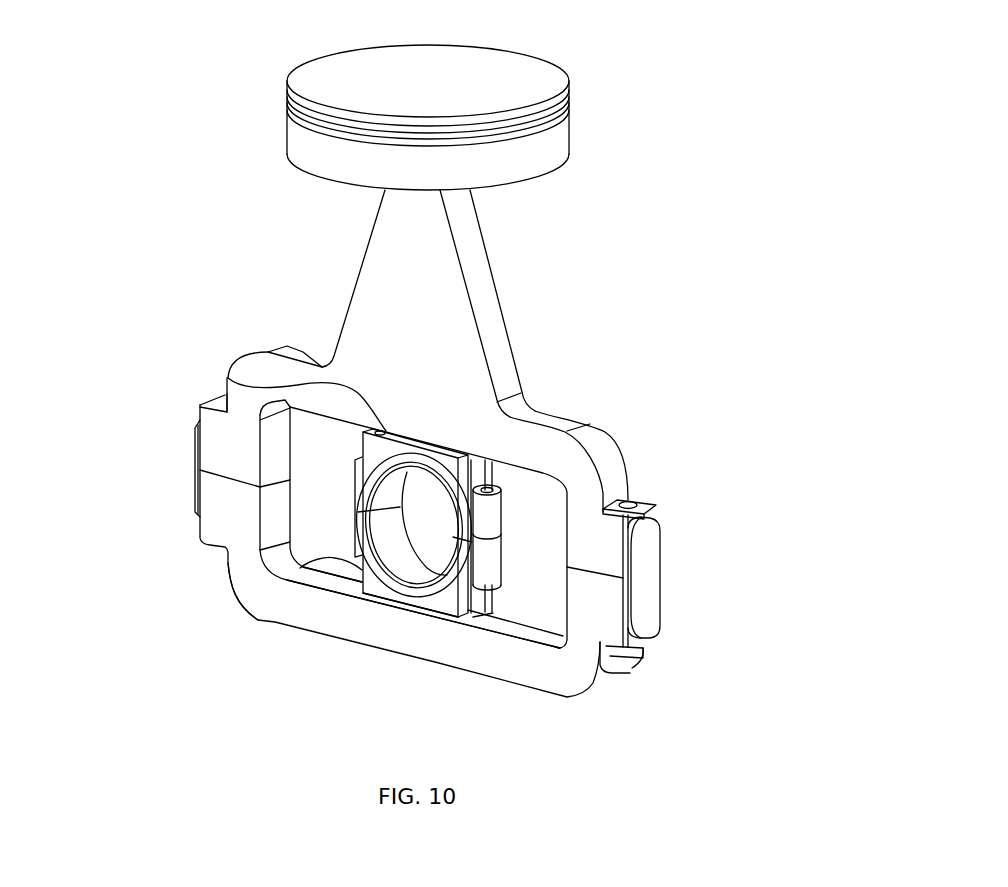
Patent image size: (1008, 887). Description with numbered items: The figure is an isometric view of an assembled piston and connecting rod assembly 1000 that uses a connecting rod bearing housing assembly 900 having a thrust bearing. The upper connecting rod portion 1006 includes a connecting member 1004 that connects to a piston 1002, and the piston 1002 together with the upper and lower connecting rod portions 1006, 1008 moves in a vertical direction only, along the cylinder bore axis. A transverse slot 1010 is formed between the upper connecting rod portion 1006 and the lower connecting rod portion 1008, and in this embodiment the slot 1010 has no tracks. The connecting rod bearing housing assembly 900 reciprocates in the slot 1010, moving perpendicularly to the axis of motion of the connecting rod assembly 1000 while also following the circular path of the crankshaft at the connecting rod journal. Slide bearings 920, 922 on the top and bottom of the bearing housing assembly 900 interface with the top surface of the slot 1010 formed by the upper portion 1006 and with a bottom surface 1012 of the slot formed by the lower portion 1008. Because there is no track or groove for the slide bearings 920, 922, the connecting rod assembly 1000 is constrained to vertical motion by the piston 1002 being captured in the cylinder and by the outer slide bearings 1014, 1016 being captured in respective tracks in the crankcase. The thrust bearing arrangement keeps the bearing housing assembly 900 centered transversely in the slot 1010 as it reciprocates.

The piston and connecting rod assembly 1000 is at (856, 39).
The piston 1002 is at (517, 78).
The connecting member 1004 is at (480, 288).
The upper connecting rod portion 1006 is at (610, 455).
The lower connecting rod portion 1008 is at (240, 606).
The transverse slot 1010 is at (562, 532).
The bottom ledge / rail 1012 is at (517, 632).
The outer slide bearing 1014 is at (645, 550).
The outer slide bearing 1016 is at (197, 460).
The connecting rod bearing housing assembly 900 is at (320, 557).
The slide bearing 920 is at (228, 378).
The slide bearing 922 is at (407, 613).